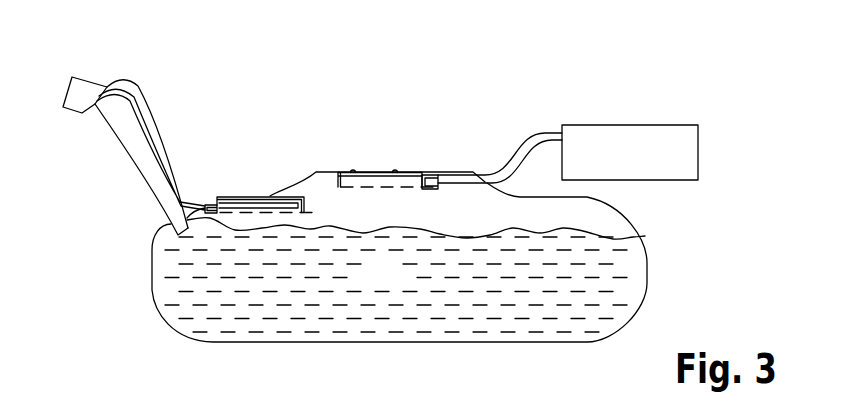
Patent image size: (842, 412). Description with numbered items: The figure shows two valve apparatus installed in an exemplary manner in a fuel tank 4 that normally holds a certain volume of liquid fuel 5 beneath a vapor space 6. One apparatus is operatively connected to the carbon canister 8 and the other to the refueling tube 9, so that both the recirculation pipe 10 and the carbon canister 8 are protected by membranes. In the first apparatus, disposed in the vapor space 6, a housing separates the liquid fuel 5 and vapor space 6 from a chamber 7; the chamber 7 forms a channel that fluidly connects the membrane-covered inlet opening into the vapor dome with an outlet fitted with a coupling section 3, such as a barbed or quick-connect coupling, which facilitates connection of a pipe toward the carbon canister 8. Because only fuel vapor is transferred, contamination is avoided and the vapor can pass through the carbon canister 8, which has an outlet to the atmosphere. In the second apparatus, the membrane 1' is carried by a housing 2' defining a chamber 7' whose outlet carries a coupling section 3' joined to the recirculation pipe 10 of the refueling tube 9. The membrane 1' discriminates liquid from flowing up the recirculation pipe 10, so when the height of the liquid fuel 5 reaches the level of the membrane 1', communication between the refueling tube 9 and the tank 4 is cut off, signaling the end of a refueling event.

The membrane 1' is at (258, 160).
The housing 2' is at (260, 156).
The coupling section 3 is at (434, 136).
The coupling section 3' is at (209, 163).
The fuel tank 4 is at (548, 186).
The liquid fuel 5 is at (377, 277).
The vapor space 6 is at (310, 201).
The chamber 7 is at (385, 146).
The chamber 7' is at (266, 148).
The carbon canister 8 is at (615, 162).
The refueling tube 9 is at (124, 134).
The recirculation pipe 10 is at (153, 108).